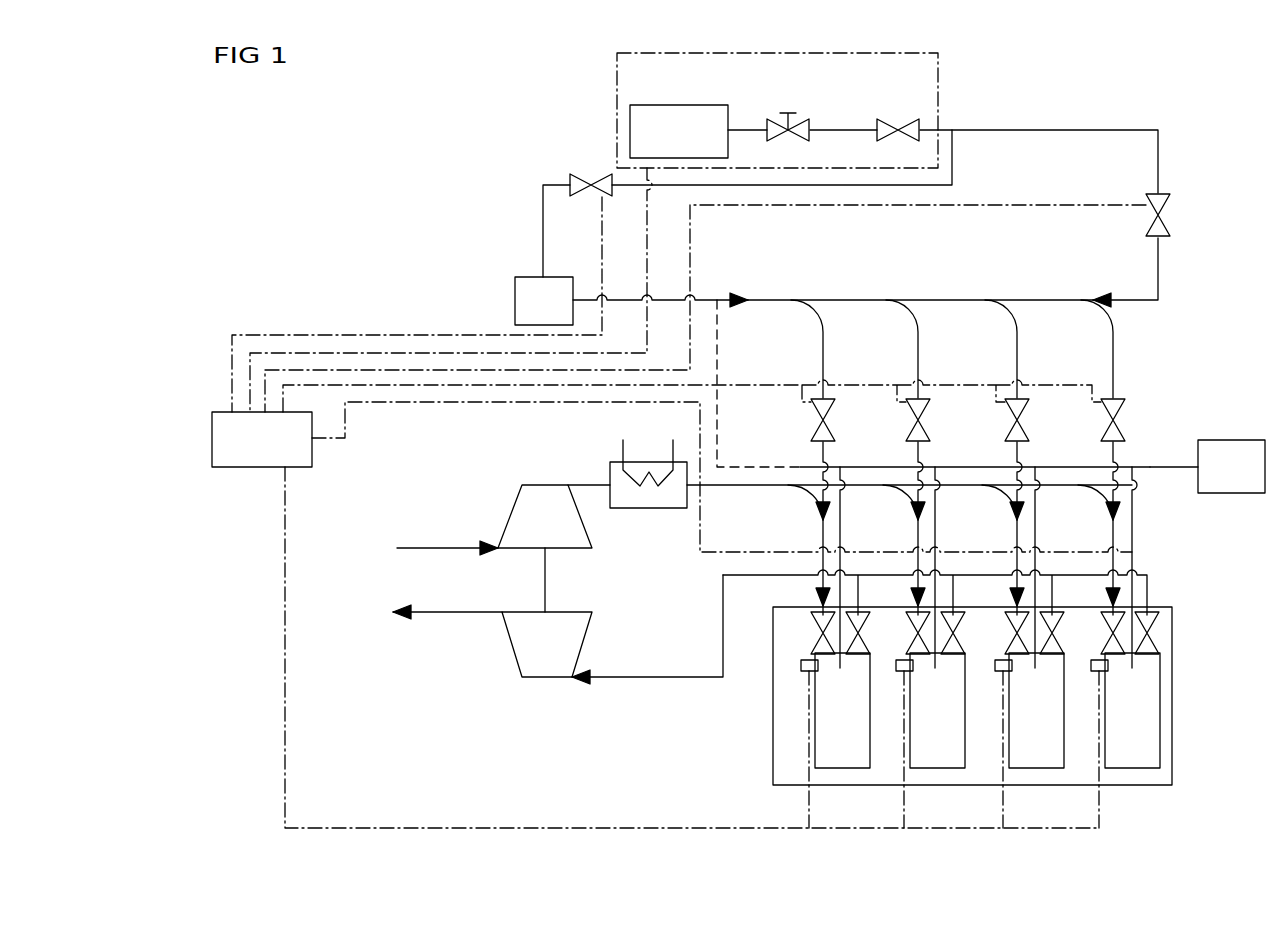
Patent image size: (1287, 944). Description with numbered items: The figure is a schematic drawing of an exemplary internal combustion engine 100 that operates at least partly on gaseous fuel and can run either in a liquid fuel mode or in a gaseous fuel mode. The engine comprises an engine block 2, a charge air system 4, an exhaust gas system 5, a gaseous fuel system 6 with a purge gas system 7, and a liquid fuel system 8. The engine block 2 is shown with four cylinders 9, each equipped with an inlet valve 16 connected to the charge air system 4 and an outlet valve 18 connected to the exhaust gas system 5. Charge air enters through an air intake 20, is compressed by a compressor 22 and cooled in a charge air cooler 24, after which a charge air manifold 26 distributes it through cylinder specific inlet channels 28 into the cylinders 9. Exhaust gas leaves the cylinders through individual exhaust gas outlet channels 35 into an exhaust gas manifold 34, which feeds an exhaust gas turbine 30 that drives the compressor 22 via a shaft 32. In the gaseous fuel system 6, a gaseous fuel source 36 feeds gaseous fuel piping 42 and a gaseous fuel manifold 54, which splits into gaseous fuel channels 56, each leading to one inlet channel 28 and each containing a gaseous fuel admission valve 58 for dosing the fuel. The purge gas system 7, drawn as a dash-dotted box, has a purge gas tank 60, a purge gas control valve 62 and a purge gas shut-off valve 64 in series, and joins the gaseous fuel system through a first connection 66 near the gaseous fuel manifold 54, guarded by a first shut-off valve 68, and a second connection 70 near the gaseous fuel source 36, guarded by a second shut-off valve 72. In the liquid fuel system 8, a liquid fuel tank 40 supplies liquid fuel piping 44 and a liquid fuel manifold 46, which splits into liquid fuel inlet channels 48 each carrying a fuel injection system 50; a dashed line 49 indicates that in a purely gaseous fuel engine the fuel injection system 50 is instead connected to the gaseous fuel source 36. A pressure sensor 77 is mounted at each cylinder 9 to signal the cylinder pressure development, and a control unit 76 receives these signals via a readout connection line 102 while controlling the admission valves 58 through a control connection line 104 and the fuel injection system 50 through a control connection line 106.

The internal combustion engine 100 is at (738, 430).
The engine block 2 is at (773, 748).
The charge air system 4 is at (546, 494).
The exhaust gas system 5 is at (546, 667).
The gaseous fuel system 6 is at (538, 180).
The purge gas system 7 is at (938, 86).
The liquid fuel system 8 is at (1222, 462).
The cylinder 9 is at (840, 768).
The inlet valve 16 is at (954, 658).
The outlet valve 18 is at (860, 653).
The air intake 20 is at (447, 548).
The compressor 22 is at (593, 528).
The charge air cooler 24 is at (648, 462).
The charge air manifold 26 is at (872, 485).
The inlet channel 28 is at (800, 485).
The exhaust gas turbine 30 is at (582, 645).
The shaft 32 is at (546, 582).
The exhaust gas manifold 34 is at (723, 590).
The exhaust gas outlet channel 35 is at (860, 595).
The gaseous fuel source 36 is at (532, 277).
The liquid fuel tank 40 is at (1232, 493).
The gaseous fuel piping 42 is at (620, 300).
The liquid fuel piping 44 is at (1165, 470).
The liquid fuel manifold 46 is at (1062, 467).
The liquid fuel inlet channel 48 is at (1138, 545).
The dashed line 49 is at (718, 432).
The fuel injection system 50 is at (811, 634).
The gaseous fuel manifold 54 is at (840, 300).
The gaseous fuel channel 56 is at (826, 345).
The gaseous fuel admission valve 58 is at (836, 408).
The purge gas tank 60 is at (630, 118).
The purge gas control valve 62 is at (790, 118).
The purge gas shut-off valve 64 is at (900, 118).
The first connection 66 is at (1135, 300).
The first shut-off valve 68 is at (1170, 212).
The second connection 70 is at (952, 172).
The second shut-off valve 72 is at (583, 176).
The control unit 76 is at (262, 467).
The pressure sensor 77 is at (806, 672).
The readout connection line 102 is at (503, 828).
The control connection line 104 is at (778, 385).
The control connection line 106 is at (410, 403).